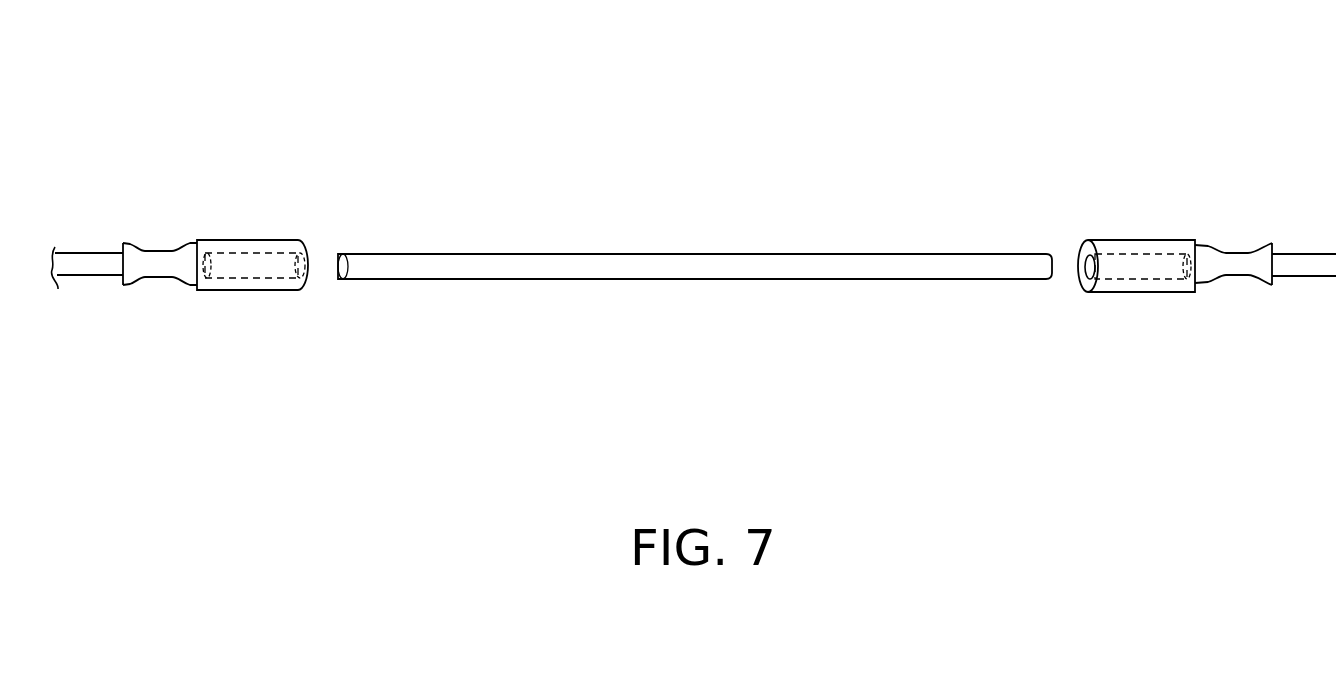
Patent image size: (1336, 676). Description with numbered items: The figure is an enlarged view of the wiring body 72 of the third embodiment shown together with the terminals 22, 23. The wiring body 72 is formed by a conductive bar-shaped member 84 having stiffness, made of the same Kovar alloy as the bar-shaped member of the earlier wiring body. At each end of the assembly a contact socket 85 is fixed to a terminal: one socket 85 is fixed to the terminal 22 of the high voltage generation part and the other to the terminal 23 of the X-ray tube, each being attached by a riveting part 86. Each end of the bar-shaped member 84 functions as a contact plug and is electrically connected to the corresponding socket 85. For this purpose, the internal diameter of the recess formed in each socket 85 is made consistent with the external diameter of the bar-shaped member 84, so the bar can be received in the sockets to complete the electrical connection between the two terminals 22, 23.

The wiring body 72 is at (692, 136).
The terminal 22 is at (90, 277).
The terminal 23 is at (1300, 265).
The bar-shaped member 84 is at (720, 265).
The contact socket 85 is at (257, 247).
The riveting part 86 is at (155, 260).